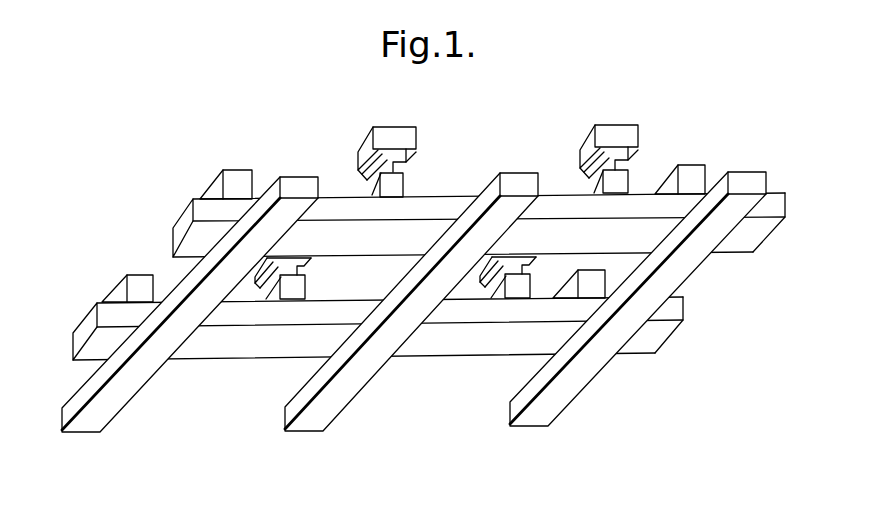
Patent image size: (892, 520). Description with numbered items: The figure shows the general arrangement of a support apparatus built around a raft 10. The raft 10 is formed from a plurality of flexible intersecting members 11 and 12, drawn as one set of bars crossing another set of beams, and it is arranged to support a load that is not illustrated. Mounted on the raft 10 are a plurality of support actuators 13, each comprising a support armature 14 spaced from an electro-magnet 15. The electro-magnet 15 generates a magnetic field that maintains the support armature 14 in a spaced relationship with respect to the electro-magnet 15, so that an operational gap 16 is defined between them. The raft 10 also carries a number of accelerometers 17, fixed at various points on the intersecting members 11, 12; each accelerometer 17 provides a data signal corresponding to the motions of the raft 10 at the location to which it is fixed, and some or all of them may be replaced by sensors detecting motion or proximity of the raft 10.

The raft 10 is at (427, 280).
The flexible intersecting member 11 is at (752, 233).
The flexible intersecting member 12 is at (83, 427).
The support actuator 13 is at (479, 189).
The support armature 14 is at (607, 183).
The electro-magnet 15 is at (623, 136).
The operational gap 16 is at (596, 172).
The accelerometer 17 is at (242, 185).